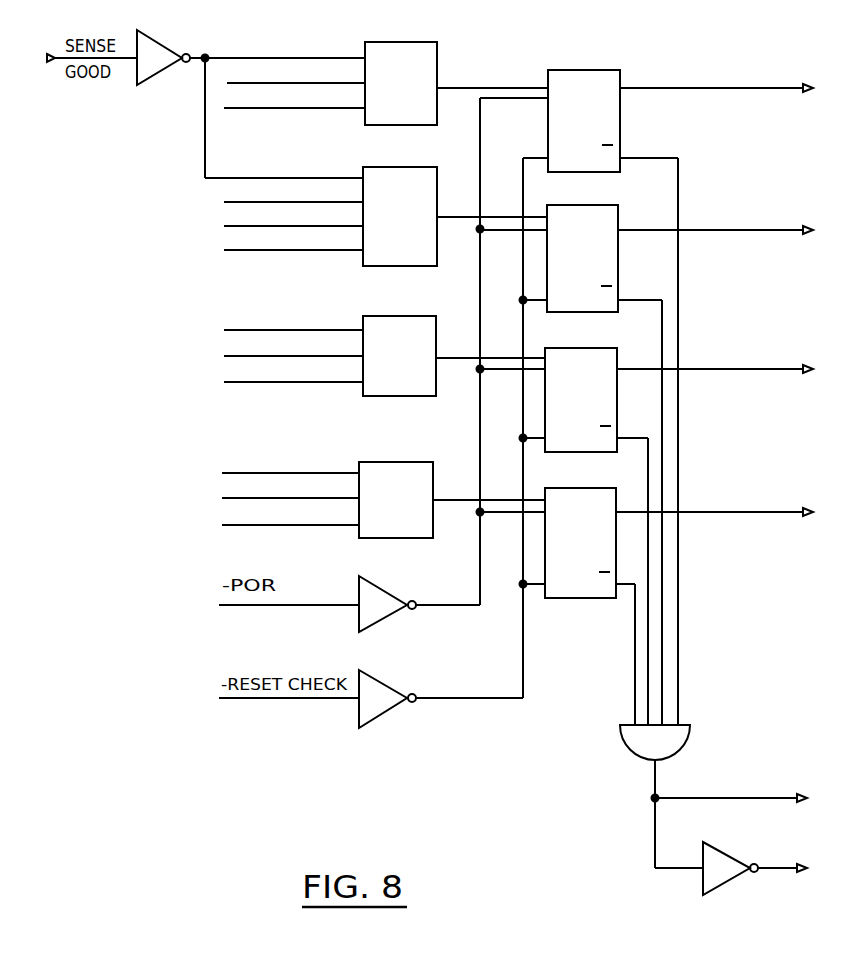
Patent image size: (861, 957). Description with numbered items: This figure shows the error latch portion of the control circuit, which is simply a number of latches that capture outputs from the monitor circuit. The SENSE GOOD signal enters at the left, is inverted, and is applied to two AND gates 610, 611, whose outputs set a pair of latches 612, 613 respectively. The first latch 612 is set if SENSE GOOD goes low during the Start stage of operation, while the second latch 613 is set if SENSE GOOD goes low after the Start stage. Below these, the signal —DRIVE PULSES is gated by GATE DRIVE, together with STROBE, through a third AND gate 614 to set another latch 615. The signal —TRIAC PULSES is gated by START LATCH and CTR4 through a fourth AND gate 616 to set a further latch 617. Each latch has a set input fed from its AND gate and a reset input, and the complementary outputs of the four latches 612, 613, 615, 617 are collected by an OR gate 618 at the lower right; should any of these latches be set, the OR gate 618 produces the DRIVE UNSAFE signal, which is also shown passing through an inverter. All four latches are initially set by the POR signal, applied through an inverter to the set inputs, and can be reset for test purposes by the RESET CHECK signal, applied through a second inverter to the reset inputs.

The AND gate 610 is at (430, 42).
The AND gate 611 is at (414, 167).
The latch 612 is at (595, 70).
The latch 613 is at (593, 205).
The AND gate 614 is at (410, 316).
The latch 615 is at (588, 348).
The AND gate 616 is at (407, 462).
The latch 617 is at (580, 488).
The OR gate 618 is at (690, 738).